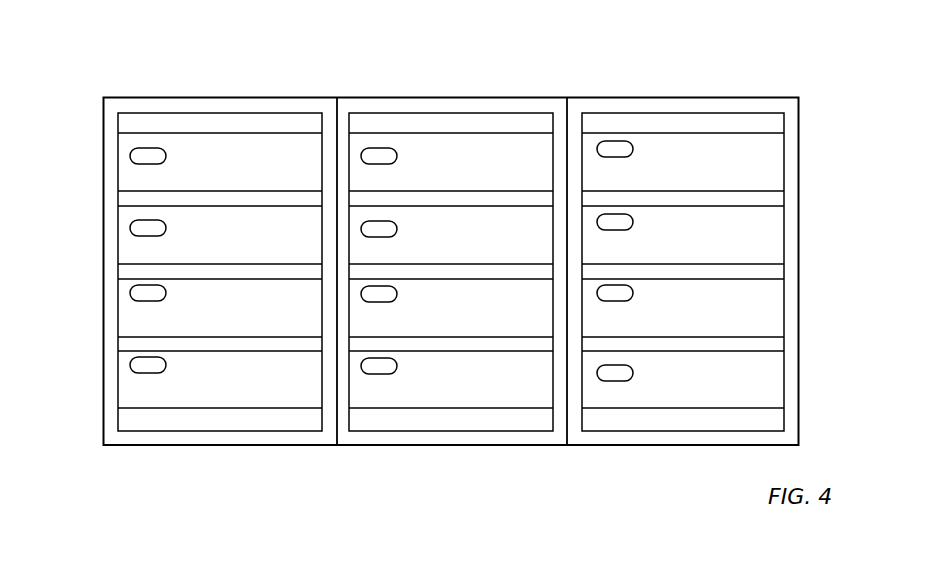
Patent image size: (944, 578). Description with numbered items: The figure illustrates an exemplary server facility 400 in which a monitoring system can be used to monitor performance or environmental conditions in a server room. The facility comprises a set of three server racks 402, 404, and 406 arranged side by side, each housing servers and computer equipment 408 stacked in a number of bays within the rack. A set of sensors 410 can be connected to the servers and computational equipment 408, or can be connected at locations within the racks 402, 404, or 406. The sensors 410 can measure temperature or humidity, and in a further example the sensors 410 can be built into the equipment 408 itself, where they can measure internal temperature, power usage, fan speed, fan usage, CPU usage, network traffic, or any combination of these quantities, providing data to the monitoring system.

The storage cabinet assembly 400 is at (443, 266).
The server rack 402 is at (205, 97).
The server rack 404 is at (452, 97).
The server rack 406 is at (655, 97).
The servers and computer equipment 408 is at (148, 394).
The sensors 410 is at (160, 155).